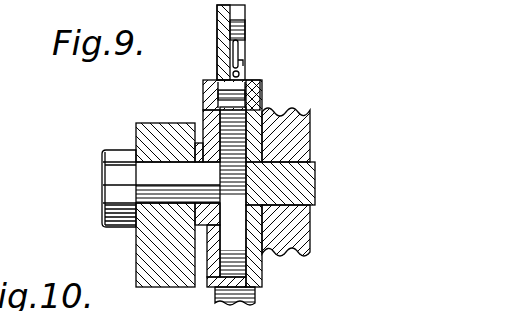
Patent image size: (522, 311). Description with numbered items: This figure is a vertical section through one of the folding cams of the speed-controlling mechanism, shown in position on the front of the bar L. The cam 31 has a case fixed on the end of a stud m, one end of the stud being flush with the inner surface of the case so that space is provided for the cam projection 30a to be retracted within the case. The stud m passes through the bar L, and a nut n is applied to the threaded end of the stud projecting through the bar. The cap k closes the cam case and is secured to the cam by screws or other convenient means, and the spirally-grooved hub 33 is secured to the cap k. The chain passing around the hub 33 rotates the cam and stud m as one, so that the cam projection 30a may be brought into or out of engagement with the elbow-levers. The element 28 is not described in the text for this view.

The stud m is at (172, 175).
The nut n is at (100, 160).
The cam projection 30a is at (243, 42).
The cam 31 is at (262, 82).
The spirally-grooved hub 33 is at (315, 233).
The cap k is at (262, 275).
The shaft end stub 28 is at (255, 296).
The bar L is at (203, 209).